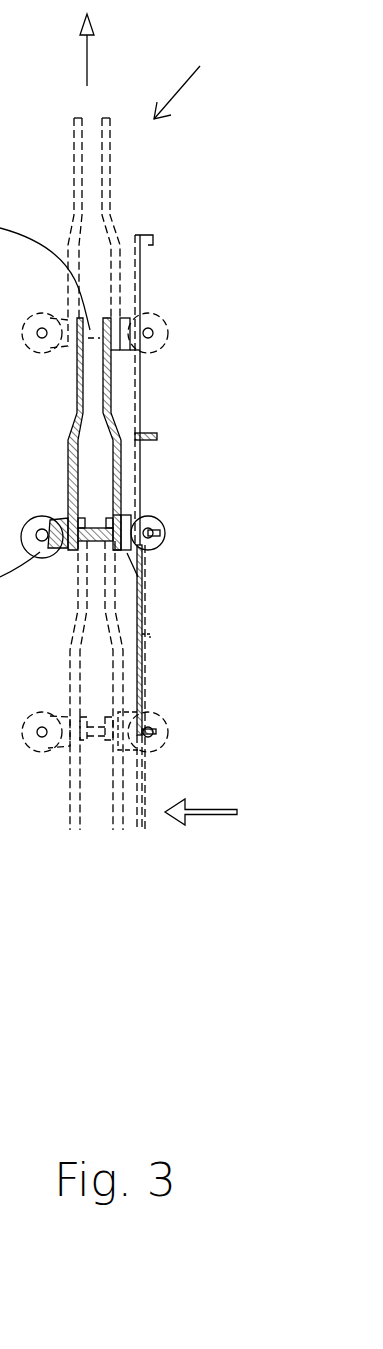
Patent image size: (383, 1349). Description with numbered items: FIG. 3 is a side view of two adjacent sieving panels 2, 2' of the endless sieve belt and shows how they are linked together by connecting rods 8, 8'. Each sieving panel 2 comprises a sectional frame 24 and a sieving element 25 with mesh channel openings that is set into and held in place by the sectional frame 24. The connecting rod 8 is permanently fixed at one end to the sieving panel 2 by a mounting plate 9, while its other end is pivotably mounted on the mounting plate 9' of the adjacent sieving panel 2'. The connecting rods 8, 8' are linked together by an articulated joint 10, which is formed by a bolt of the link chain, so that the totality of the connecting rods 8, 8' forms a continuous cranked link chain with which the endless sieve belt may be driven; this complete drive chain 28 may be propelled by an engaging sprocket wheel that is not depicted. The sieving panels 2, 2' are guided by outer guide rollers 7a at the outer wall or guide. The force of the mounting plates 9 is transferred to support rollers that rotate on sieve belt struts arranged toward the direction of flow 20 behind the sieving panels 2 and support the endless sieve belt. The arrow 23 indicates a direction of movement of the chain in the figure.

The direction of movement arrow 23 is at (88, 52).
The drive chain 28 is at (194, 87).
The connecting rod 8' is at (145, 218).
The sieving panel 2' is at (179, 387).
The mounting plate 9' is at (167, 317).
The connecting rod 8 is at (143, 434).
The sectional frame 24 is at (150, 433).
The sieving panel 2 is at (179, 455).
The articulated joint 10 is at (95, 528).
The outer guide roller 7a is at (160, 540).
The mounting plate 9 is at (172, 687).
The sieving element 25 is at (143, 690).
The direction of flow 20 is at (202, 815).